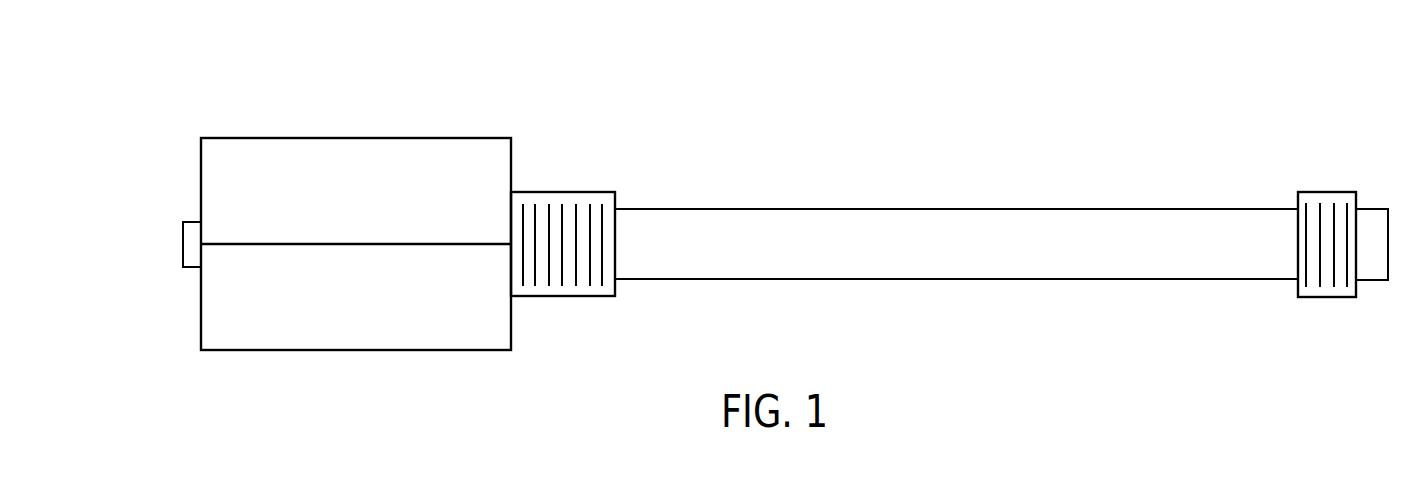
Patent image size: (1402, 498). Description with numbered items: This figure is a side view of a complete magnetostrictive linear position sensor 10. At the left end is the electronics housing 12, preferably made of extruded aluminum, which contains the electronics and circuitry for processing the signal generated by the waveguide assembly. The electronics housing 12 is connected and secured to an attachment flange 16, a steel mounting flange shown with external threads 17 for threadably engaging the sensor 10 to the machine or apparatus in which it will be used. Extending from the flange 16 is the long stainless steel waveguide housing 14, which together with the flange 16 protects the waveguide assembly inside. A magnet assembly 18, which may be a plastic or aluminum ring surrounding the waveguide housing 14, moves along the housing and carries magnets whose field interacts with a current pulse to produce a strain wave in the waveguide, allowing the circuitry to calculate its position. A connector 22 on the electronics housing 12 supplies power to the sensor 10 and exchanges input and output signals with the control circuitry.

The sensor 10 is at (735, 98).
The electronics housing 12 is at (344, 340).
The waveguide housing 14 is at (946, 270).
The attachment flange 16 is at (552, 296).
The external threads 17 is at (528, 206).
The magnet assembly 18 is at (1316, 297).
The connector 22 is at (183, 242).